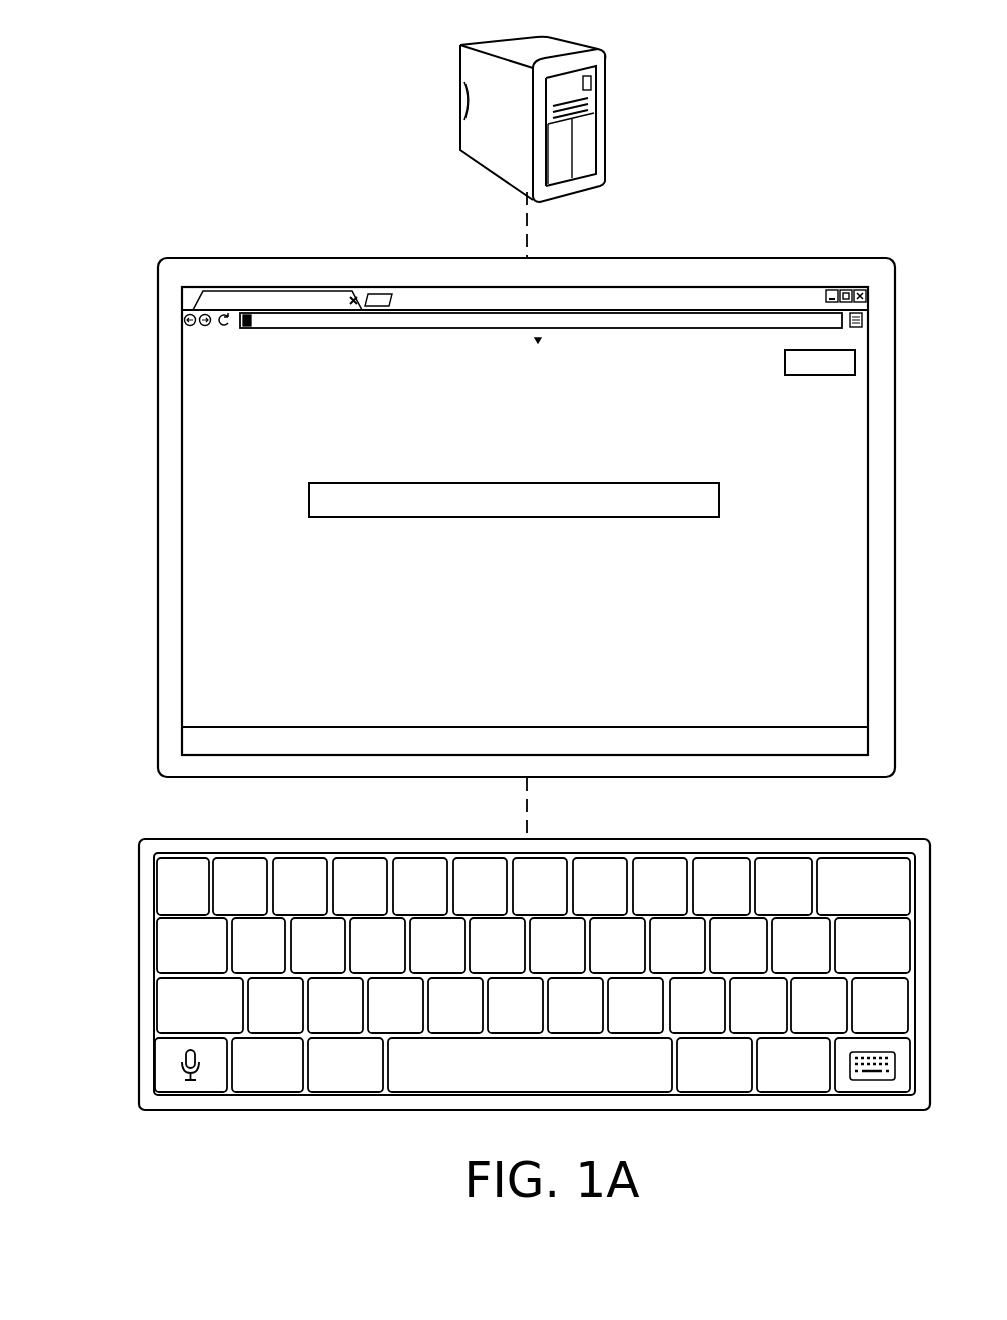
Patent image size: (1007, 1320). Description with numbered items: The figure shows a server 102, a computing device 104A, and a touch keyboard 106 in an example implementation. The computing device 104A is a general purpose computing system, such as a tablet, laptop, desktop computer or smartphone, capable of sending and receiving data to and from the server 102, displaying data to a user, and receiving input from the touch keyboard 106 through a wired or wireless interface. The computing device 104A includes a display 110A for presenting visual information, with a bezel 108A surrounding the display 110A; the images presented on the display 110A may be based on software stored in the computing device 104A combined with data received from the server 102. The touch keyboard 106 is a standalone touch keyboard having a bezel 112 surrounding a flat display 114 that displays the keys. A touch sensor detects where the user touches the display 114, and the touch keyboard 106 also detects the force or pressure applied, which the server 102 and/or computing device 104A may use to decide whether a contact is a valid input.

The server 102 is at (605, 123).
The computing device 104A is at (265, 258).
The touch keyboard 106 is at (762, 838).
The bezel 108A is at (168, 705).
The display 110A is at (289, 419).
The bezel 112 is at (201, 838).
The display 114 is at (292, 1086).